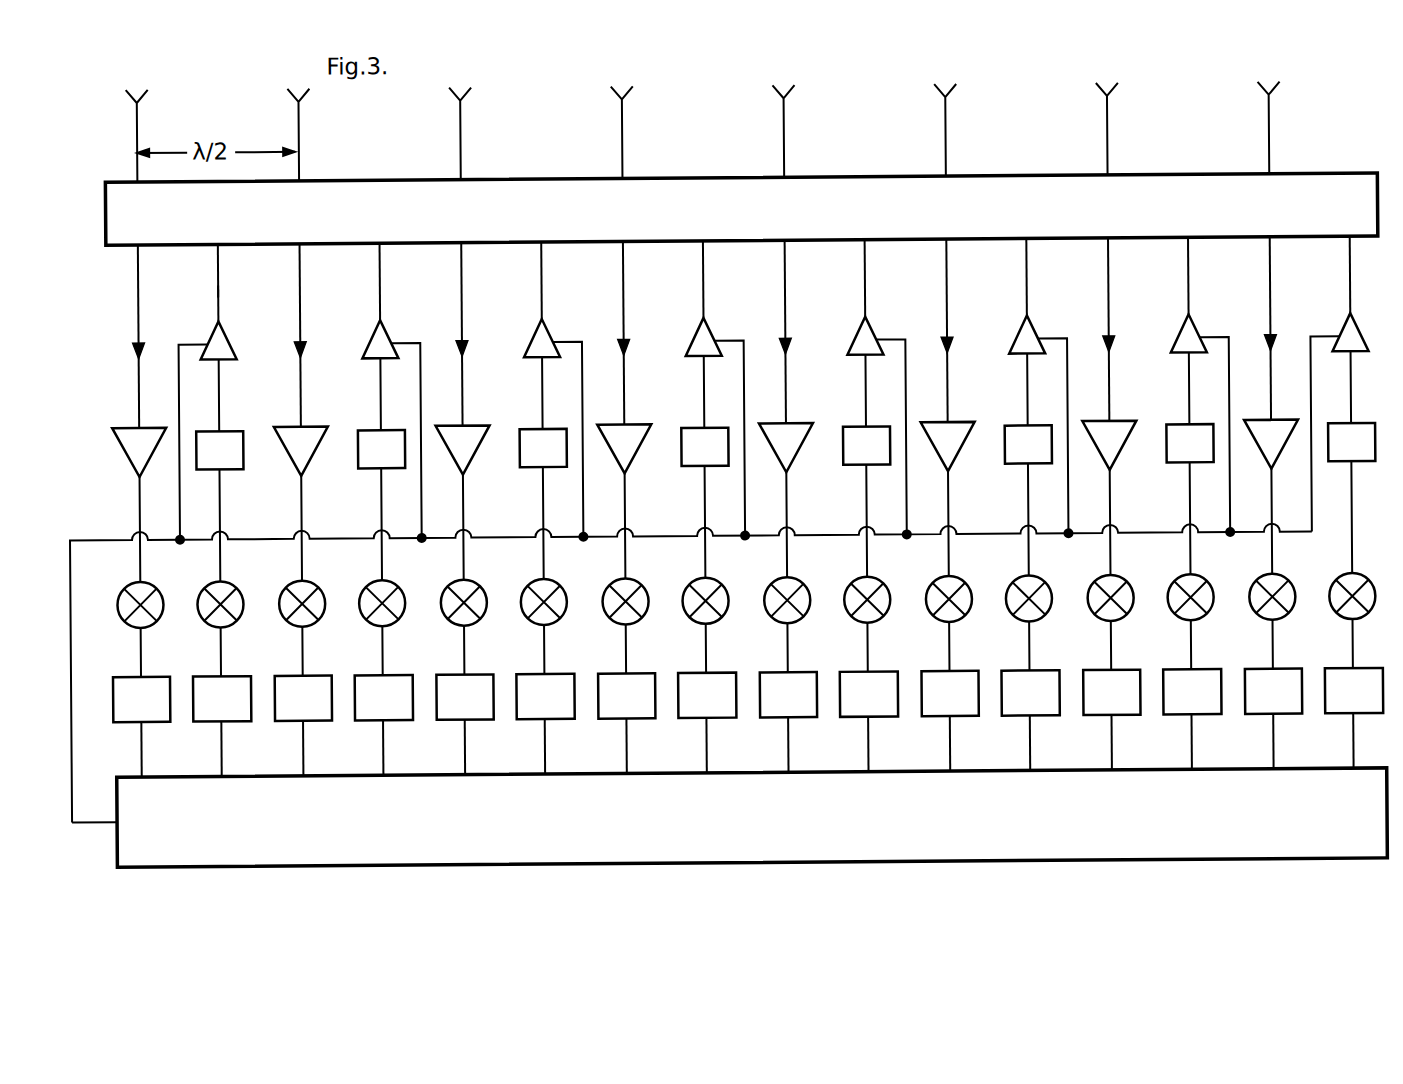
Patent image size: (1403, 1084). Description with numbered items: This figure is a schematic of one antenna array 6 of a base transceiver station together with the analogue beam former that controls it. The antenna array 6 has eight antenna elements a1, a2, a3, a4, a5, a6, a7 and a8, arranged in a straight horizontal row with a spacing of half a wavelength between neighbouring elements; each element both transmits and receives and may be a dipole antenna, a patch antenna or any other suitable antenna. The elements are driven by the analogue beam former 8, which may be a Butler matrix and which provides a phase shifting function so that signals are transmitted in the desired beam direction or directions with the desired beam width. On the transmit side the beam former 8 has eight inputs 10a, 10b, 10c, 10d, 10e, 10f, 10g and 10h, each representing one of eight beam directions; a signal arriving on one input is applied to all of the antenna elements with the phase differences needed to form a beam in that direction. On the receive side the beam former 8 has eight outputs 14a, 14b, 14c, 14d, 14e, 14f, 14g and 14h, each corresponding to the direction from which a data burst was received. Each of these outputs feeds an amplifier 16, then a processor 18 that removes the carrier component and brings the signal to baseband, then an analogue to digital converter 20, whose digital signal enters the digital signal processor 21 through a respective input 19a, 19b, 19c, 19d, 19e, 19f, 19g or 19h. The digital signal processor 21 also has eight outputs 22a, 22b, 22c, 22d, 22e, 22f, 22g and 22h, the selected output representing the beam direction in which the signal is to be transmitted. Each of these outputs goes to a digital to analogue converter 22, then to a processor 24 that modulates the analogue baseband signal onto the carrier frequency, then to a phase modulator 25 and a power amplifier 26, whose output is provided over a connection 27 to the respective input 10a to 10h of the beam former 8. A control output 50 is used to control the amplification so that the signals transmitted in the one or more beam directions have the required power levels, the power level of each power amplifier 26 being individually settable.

The antenna array 6 is at (1190, 82).
The antenna element a1 is at (142, 100).
The antenna element a2 is at (328, 134).
The antenna element a3 is at (490, 133).
The antenna element a4 is at (652, 132).
The antenna element a5 is at (813, 131).
The antenna element a6 is at (975, 130).
The antenna element a7 is at (1137, 128).
The antenna element a8 is at (1299, 127).
The analogue beam former 8 is at (910, 210).
The beam former input 10a is at (220, 245).
The beam former input 10b is at (412, 263).
The beam former input 10c is at (573, 262).
The beam former input 10d is at (736, 260).
The beam former input 10e is at (897, 259).
The beam former input 10f is at (1056, 258).
The beam former input 10g is at (1221, 257).
The beam former input 10h is at (1317, 256).
The beam former output 14a is at (140, 258).
The beam former output 14b is at (275, 335).
The beam former output 14c is at (436, 334).
The beam former output 14d is at (598, 332).
The beam former output 14e is at (760, 331).
The beam former output 14f is at (921, 330).
The beam former output 14g is at (1083, 329).
The beam former output 14h is at (1245, 328).
The transmit line 27 is at (218, 292).
The power amplifier 26 is at (208, 338).
The phase modulator 25 is at (232, 470).
The amplifier 16 is at (133, 428).
The processor 18 is at (119, 598).
The processor 24 is at (199, 598).
The analogue to digital converter 20 is at (121, 677).
The digital to analogue converter 22 is at (201, 677).
The digital signal processor input 19a is at (140, 760).
The digital signal processor input 19b is at (274, 748).
The digital signal processor input 19c is at (436, 747).
The digital signal processor input 19d is at (597, 745).
The digital signal processor input 19e is at (759, 744).
The digital signal processor input 19f is at (921, 743).
The digital signal processor input 19g is at (1083, 742).
The digital signal processor input 19h is at (1244, 741).
The digital signal processor output 22a is at (220, 760).
The digital signal processor output 22b is at (354, 747).
The digital signal processor output 22c is at (516, 746).
The digital signal processor output 22d is at (677, 745).
The digital signal processor output 22e is at (839, 744).
The digital signal processor output 22f is at (1001, 742).
The digital signal processor output 22g is at (1163, 741).
The digital signal processor output 22h is at (1324, 740).
The output 50 is at (83, 823).
The digital signal processor 21 is at (165, 868).